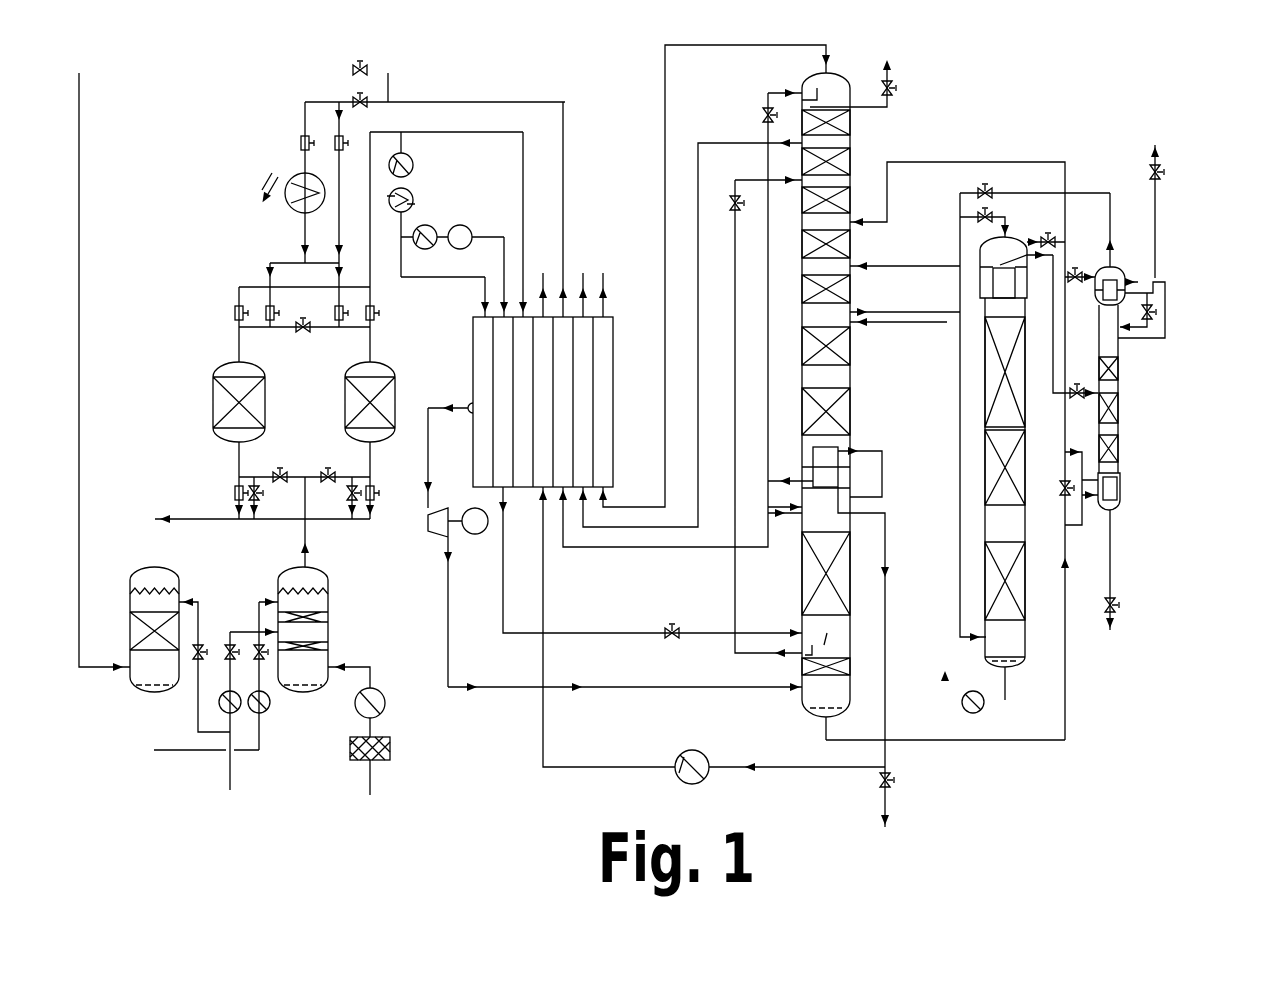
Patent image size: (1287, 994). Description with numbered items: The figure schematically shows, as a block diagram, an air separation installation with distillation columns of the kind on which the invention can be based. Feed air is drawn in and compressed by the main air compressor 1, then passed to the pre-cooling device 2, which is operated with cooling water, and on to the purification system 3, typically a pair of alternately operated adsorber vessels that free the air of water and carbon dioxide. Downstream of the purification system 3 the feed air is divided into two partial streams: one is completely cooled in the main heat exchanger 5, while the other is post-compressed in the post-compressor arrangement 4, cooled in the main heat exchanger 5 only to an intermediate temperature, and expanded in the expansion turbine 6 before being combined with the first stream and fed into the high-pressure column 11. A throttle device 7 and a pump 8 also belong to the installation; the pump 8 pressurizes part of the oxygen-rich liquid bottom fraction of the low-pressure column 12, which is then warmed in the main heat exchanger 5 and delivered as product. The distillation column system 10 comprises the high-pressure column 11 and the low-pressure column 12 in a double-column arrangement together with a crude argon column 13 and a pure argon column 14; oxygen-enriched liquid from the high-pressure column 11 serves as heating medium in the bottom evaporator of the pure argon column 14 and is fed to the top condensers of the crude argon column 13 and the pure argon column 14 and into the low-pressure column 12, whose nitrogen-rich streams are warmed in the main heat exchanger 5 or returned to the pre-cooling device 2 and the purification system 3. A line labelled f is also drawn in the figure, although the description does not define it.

The main air compressor 1 is at (388, 704).
The pre-cooling device 2 is at (342, 610).
The purification system 3 is at (200, 405).
The post-compressor arrangement 4 is at (437, 196).
The main heat exchanger 5 is at (473, 378).
The expansion turbine 6 is at (428, 523).
The throttle device 7 is at (672, 626).
The pump 8 is at (683, 752).
The distillation column system 10 is at (1172, 442).
The high-pressure column 11 is at (802, 563).
The low-pressure column 12 is at (855, 148).
The crude argon column 13 is at (1028, 637).
The pure argon column 14 is at (1120, 430).
The recycle line f is at (915, 740).